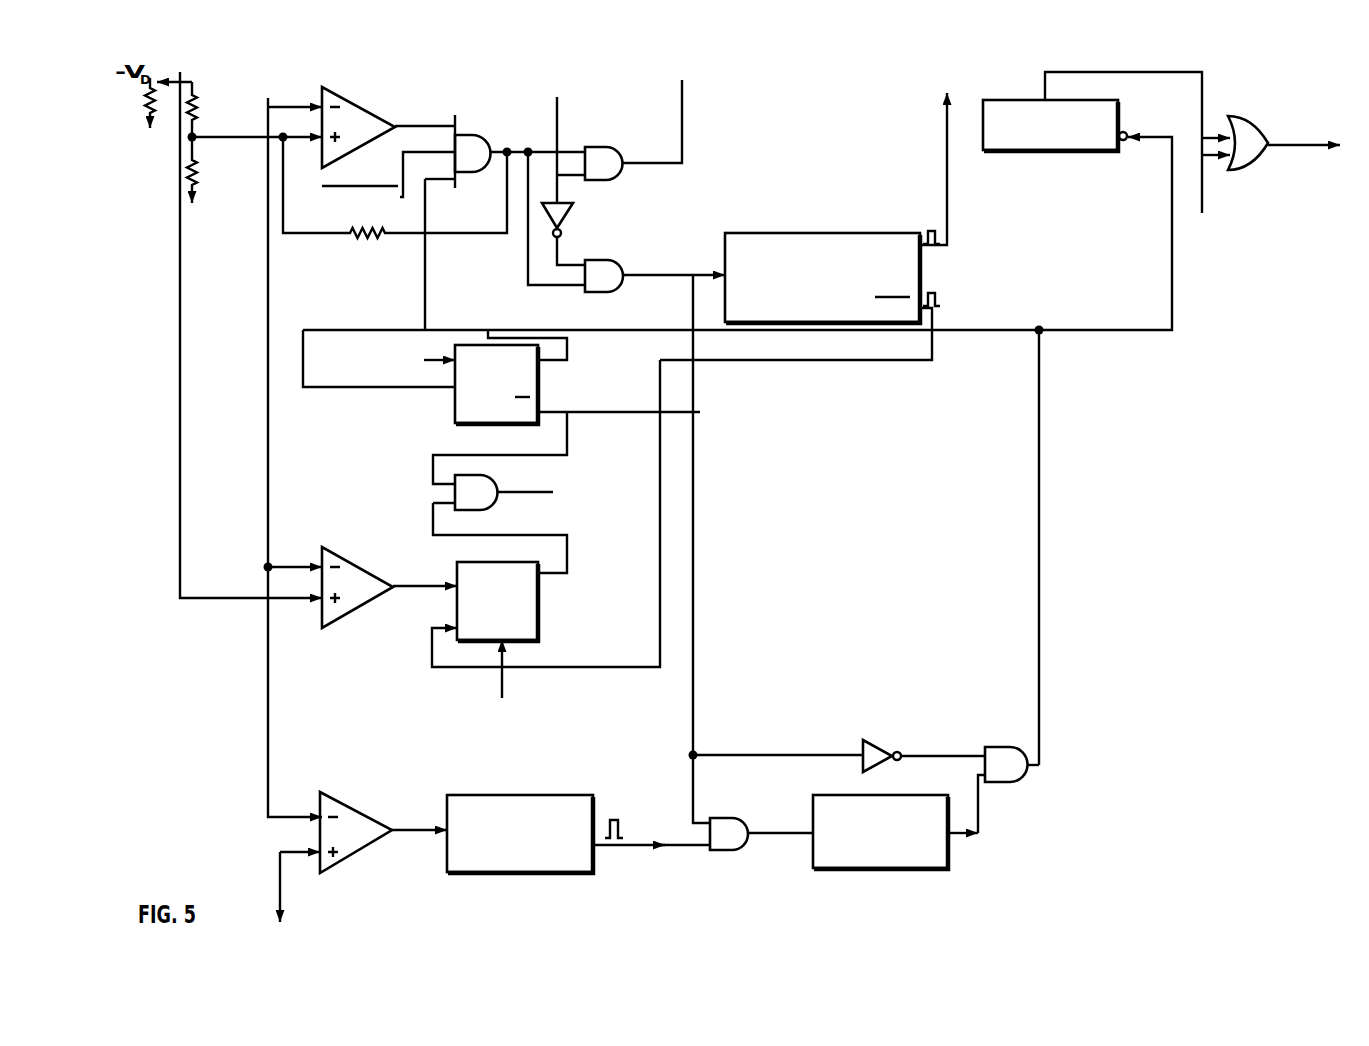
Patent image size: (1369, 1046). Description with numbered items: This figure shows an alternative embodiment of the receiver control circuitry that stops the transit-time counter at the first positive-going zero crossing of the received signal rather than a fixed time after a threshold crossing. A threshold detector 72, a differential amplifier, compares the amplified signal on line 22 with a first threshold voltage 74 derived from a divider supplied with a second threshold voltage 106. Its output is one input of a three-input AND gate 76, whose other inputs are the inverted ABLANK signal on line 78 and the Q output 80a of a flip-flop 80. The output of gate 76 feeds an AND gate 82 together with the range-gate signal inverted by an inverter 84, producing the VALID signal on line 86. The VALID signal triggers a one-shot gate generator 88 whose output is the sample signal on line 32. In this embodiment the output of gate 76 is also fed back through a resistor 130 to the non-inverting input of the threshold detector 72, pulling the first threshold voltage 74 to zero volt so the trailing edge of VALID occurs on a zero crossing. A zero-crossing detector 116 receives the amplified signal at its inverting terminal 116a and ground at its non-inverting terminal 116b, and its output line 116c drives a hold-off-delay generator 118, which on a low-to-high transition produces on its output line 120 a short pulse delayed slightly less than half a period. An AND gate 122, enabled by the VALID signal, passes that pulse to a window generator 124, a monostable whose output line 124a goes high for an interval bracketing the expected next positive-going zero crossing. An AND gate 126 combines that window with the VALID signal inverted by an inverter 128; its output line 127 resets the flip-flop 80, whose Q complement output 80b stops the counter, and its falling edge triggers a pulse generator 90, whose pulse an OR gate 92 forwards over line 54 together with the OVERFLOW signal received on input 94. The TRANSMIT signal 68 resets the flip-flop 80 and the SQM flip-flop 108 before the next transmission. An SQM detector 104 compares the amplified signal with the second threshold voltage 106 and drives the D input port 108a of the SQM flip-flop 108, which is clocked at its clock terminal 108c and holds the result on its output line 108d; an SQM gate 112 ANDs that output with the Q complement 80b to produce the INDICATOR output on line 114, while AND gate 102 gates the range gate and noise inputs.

The amplified signal line 22 is at (266, 108).
The sample signal line 32 is at (947, 111).
The OVERFLOW output line 54 is at (1306, 147).
The TRANSMIT signal 68 is at (423, 356).
The threshold detector 72 is at (322, 154).
The first threshold voltage 74 is at (180, 138).
The three-input AND gate 76 is at (476, 137).
The inverted ABLANK signal line 78 is at (402, 154).
The flip-flop 80 is at (488, 338).
The Q output 80a is at (566, 362).
The Q complement output 80b is at (566, 412).
The AND gate 82 is at (612, 294).
The inverter 84 is at (574, 216).
The VALID signal line 86 is at (692, 274).
The gate generator 88 is at (791, 233).
The pulse generator 90 is at (1112, 152).
The OR gate 92 is at (1253, 162).
The overflow input line 94 is at (1203, 194).
The AND gate 102 is at (599, 145).
The SQM detector 104 is at (352, 563).
The second threshold voltage 106 is at (180, 72).
The SQM flip-flop 108 is at (538, 606).
The D input port 108a is at (456, 584).
The clock terminal 108c is at (436, 616).
The output line 108d is at (568, 556).
The SQM gate 112 is at (490, 472).
The indicator output 114 is at (510, 496).
The zero-crossing detector 116 is at (356, 811).
The inverting terminal 116a is at (300, 824).
The non-inverting terminal 116b is at (312, 858).
The detector output line 116c is at (410, 832).
The hold-off-delay generator 118 is at (517, 795).
The output line 120 is at (642, 848).
The AND gate 122 is at (732, 816).
The window generator 124 is at (868, 870).
The window generator output line 124a is at (972, 835).
The AND gate 126 is at (1025, 783).
The output line 127 is at (1042, 622).
The inverter 128 is at (878, 740).
The resistor 130 is at (365, 238).